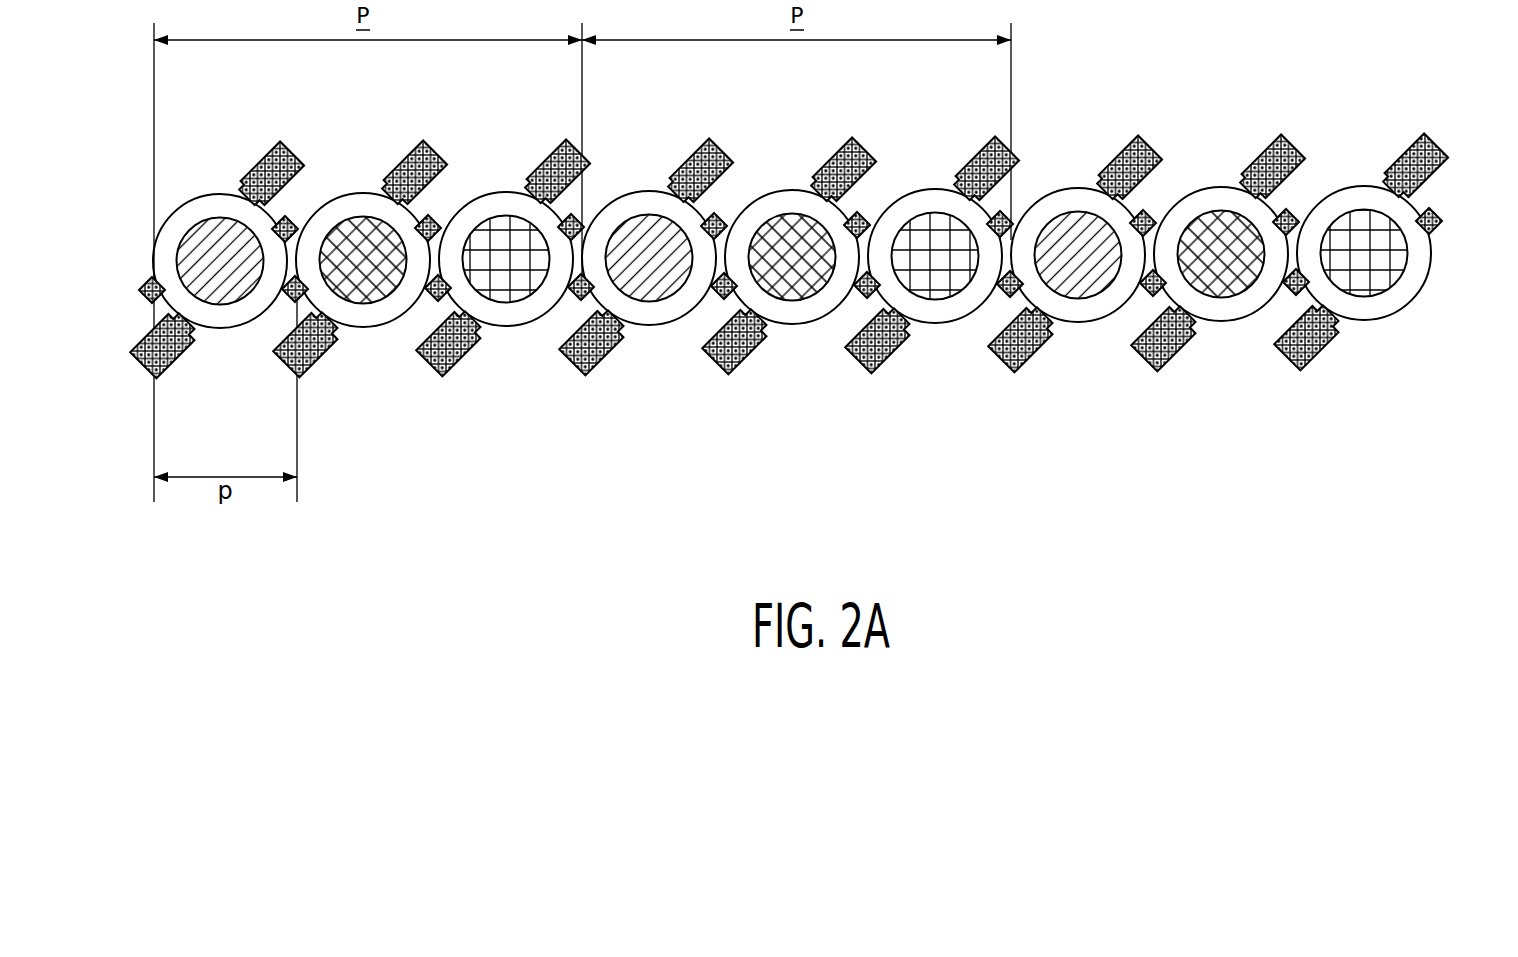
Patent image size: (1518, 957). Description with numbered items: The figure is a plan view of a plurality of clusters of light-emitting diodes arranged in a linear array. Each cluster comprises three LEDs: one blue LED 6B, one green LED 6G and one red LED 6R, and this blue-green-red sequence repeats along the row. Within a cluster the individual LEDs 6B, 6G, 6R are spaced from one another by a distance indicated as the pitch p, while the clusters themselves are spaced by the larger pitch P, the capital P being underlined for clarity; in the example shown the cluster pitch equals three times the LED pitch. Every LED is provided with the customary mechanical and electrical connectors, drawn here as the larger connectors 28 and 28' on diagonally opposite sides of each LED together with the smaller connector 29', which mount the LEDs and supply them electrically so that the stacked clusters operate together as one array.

The blue LED 6B is at (215, 230).
The green LED 6G is at (352, 230).
The red LED 6R is at (502, 230).
The mechanical and electrical connector 28 is at (1415, 137).
The mechanical and electrical connector 28' is at (1306, 364).
The mechanical and electrical connector 29' is at (1370, 321).